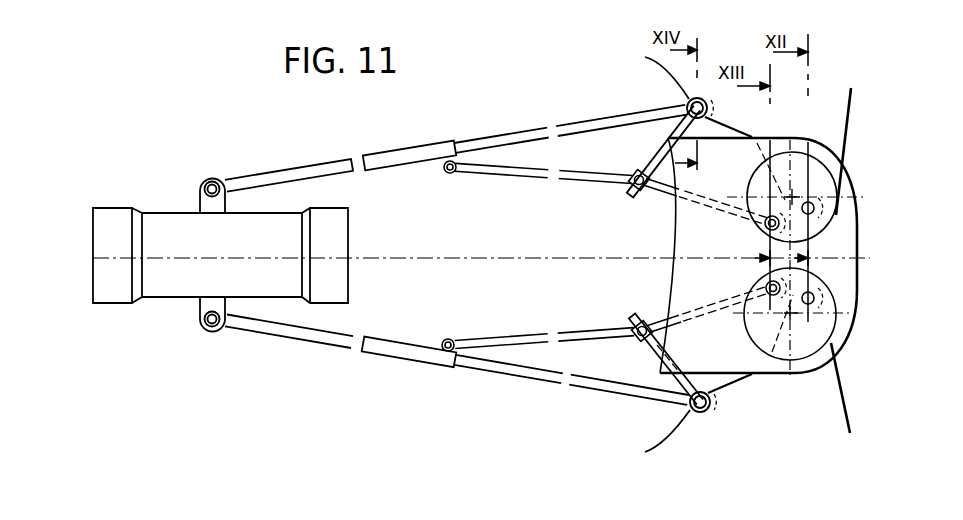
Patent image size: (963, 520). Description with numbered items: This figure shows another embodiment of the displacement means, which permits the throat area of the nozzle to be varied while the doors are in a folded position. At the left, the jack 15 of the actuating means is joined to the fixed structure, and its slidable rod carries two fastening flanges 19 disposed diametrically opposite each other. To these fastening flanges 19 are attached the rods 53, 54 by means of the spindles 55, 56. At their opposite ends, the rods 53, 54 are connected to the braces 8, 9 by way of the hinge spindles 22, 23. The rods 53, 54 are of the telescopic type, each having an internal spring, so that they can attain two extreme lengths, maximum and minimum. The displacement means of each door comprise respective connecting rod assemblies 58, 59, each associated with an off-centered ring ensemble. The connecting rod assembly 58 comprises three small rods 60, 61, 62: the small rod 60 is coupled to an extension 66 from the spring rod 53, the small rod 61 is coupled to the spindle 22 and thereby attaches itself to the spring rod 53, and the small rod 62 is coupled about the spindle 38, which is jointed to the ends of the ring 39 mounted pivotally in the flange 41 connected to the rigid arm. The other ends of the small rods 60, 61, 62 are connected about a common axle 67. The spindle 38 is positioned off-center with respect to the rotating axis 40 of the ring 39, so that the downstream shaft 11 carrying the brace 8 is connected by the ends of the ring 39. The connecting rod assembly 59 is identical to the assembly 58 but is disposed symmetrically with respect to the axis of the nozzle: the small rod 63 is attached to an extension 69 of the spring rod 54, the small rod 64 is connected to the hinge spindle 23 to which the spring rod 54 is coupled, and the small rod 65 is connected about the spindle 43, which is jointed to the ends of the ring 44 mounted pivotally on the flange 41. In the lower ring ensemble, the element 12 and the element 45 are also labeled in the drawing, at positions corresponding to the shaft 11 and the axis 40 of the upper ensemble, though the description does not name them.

The brace 8 is at (828, 131).
The brace 9 is at (828, 370).
The downstream shaft 11 is at (820, 195).
The lower cam disk 12 is at (813, 299).
The jack 15 is at (155, 215).
The fastening flanges 19 is at (200, 201).
The hinge spindle 22 is at (684, 99).
The hinge spindle 23 is at (688, 410).
The spindle 38 is at (765, 228).
The ring 39 is at (790, 140).
The rotating axis 40 is at (792, 197).
The flange 41 is at (845, 238).
The spindle 43 is at (766, 284).
The ring 44 is at (782, 355).
The cam track 45 is at (792, 316).
The rod 53 is at (415, 148).
The rod 54 is at (437, 364).
The spindle 55 is at (212, 180).
The spindle 56 is at (212, 328).
The connecting rod assembly 58 is at (588, 184).
The connecting rod assembly 59 is at (560, 318).
The small rod 60 is at (522, 176).
The small rod 61 is at (658, 162).
The small rod 62 is at (667, 195).
The small rod 63 is at (493, 337).
The small rod 64 is at (645, 345).
The small rod 65 is at (646, 318).
The extension 66 is at (446, 174).
The common axle 67 is at (634, 186).
The extension 69 is at (447, 338).